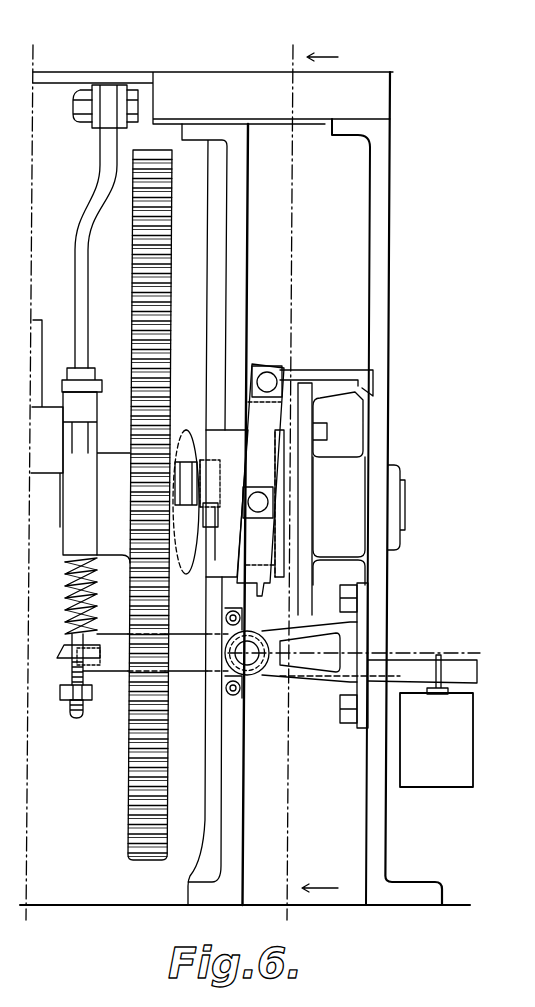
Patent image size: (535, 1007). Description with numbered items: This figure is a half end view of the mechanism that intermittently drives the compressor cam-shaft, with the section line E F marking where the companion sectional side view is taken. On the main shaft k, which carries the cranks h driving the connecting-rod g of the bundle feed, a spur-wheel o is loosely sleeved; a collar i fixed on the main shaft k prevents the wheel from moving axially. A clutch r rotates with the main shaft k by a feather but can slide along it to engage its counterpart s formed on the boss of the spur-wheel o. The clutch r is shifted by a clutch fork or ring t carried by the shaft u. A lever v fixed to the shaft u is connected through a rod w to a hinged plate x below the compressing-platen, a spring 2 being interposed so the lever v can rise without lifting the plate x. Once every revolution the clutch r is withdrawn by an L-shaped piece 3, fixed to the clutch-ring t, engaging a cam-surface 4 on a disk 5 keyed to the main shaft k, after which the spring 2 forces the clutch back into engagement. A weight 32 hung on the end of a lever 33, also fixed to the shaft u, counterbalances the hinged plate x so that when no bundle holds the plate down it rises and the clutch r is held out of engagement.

The hinged plate x is at (105, 85).
The rod w is at (91, 305).
The connecting-rod g is at (47, 423).
The cranks h is at (98, 437).
The spring 2 is at (68, 592).
The lever v is at (106, 666).
The spur-wheel o is at (165, 240).
The clutch counterpart s is at (177, 433).
The clutch r is at (223, 437).
The collar i is at (194, 484).
The clutch fork or ring t is at (258, 541).
The shaft u is at (249, 660).
The L-shaped piece 3 is at (318, 373).
The cam-surface 4 is at (344, 410).
The disk 5 is at (339, 521).
The main shaft k is at (412, 498).
The weight 32 is at (438, 777).
The lever 33 is at (397, 661).
The section line E is at (312, 470).
The section line F is at (312, 912).